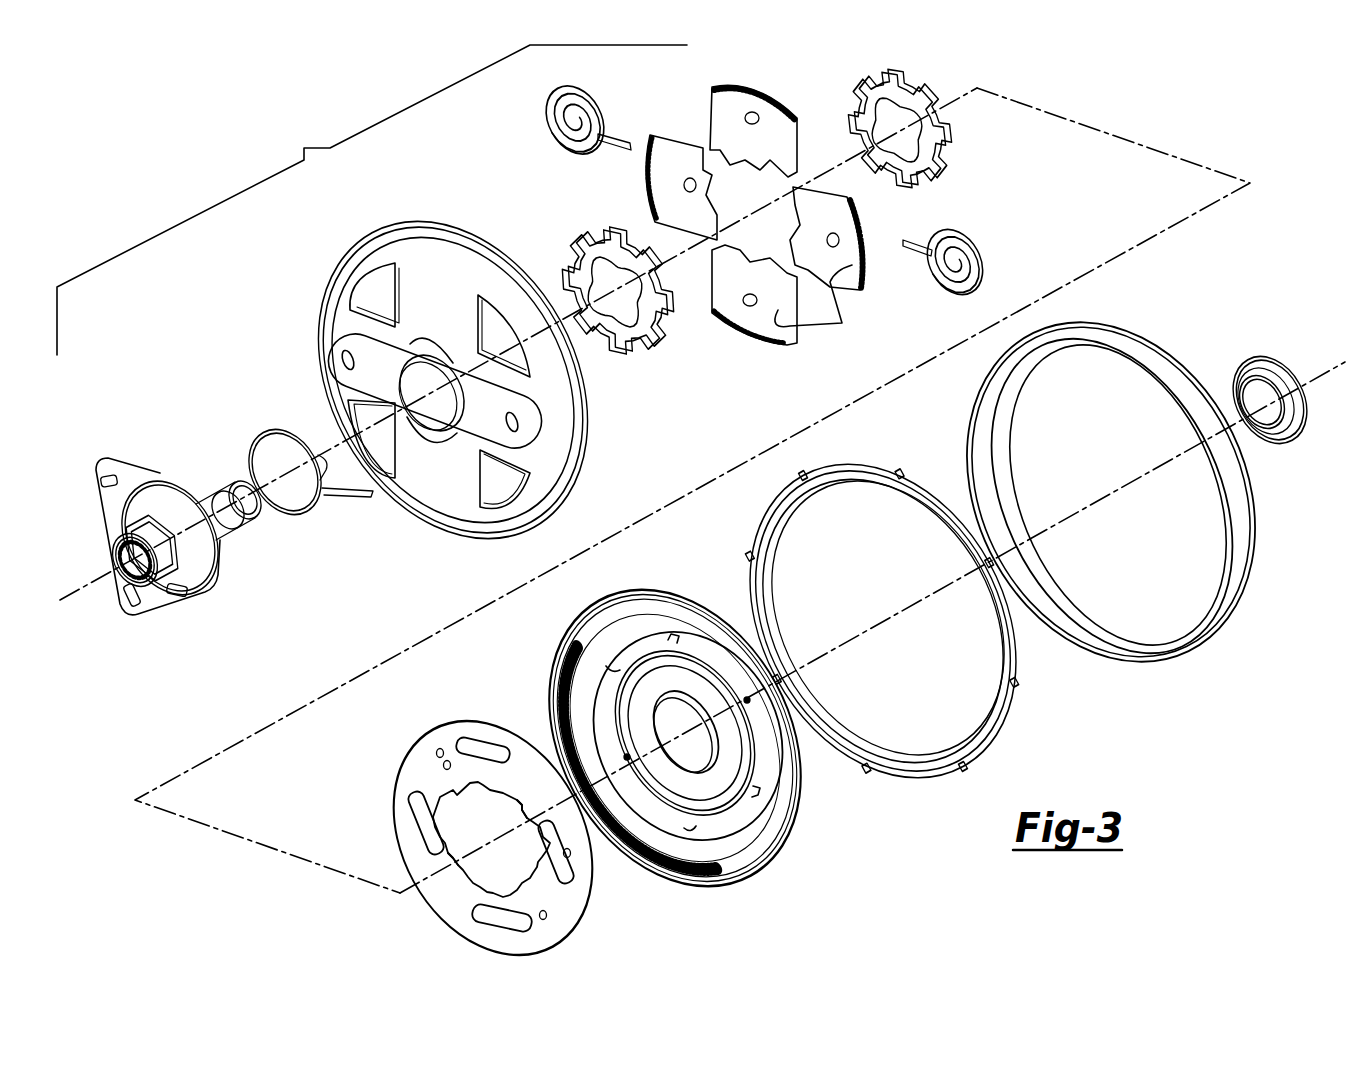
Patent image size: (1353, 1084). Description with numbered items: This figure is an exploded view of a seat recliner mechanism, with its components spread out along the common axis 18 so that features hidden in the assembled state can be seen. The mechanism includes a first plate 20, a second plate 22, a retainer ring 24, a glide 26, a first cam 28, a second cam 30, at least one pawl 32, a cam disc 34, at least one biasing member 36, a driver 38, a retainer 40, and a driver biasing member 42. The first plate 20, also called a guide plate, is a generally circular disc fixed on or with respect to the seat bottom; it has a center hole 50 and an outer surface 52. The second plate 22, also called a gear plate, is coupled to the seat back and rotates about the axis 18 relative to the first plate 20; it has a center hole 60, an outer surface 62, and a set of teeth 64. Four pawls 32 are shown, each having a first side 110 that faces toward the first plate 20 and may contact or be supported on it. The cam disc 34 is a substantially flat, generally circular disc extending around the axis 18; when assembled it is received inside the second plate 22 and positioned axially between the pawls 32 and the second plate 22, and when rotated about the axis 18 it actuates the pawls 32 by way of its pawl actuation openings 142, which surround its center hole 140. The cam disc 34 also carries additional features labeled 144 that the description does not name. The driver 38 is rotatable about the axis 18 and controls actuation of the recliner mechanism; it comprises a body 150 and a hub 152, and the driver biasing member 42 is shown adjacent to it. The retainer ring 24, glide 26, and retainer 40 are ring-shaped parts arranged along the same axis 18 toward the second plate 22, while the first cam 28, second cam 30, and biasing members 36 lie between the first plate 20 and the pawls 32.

The axis 18 is at (1345, 362).
The first plate 20 is at (453, 371).
The second plate 22 is at (674, 743).
The retainer ring 24 is at (1118, 332).
The glide 26 is at (918, 480).
The first cam 28 is at (568, 288).
The second cam 30 is at (942, 160).
The pawl 32 is at (742, 118).
The cam disc 34 is at (493, 838).
The biasing member 36 is at (558, 130).
The driver 38 is at (177, 511).
The retainer 40 is at (1270, 356).
The driver biasing member 42 is at (278, 432).
The center hole 50 is at (436, 391).
The outer surface 52 is at (451, 229).
The center hole 60 is at (694, 732).
The outer surface 62 is at (677, 600).
The set of teeth 64 is at (690, 856).
The first side 110 is at (828, 313).
The center hole 140 is at (499, 828).
The pawl actuation openings 142 is at (536, 823).
The slot 144 is at (480, 743).
The body 150 is at (90, 527).
The hub 152 is at (255, 515).